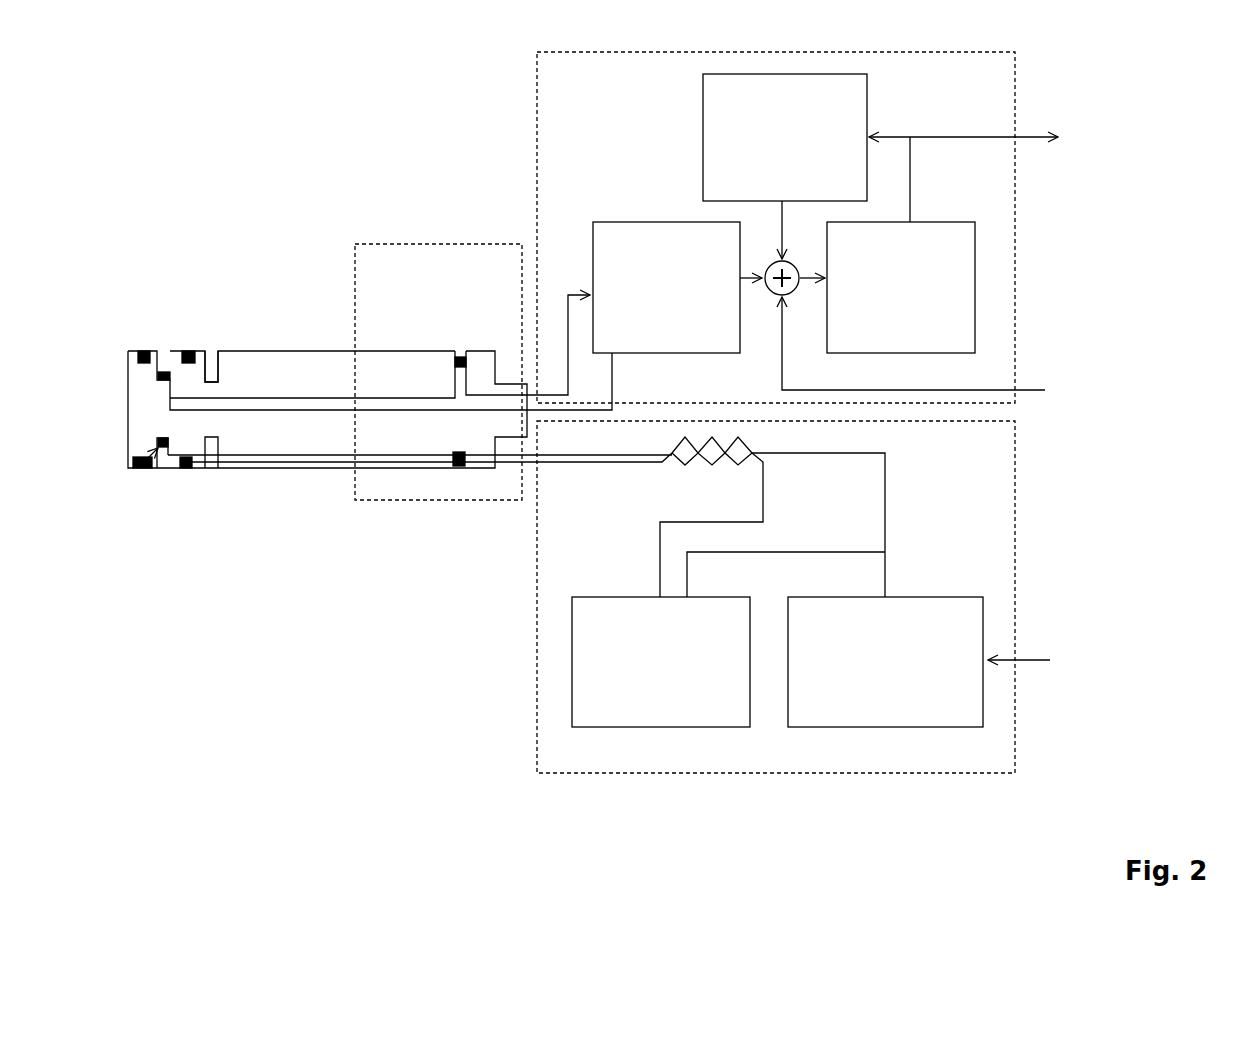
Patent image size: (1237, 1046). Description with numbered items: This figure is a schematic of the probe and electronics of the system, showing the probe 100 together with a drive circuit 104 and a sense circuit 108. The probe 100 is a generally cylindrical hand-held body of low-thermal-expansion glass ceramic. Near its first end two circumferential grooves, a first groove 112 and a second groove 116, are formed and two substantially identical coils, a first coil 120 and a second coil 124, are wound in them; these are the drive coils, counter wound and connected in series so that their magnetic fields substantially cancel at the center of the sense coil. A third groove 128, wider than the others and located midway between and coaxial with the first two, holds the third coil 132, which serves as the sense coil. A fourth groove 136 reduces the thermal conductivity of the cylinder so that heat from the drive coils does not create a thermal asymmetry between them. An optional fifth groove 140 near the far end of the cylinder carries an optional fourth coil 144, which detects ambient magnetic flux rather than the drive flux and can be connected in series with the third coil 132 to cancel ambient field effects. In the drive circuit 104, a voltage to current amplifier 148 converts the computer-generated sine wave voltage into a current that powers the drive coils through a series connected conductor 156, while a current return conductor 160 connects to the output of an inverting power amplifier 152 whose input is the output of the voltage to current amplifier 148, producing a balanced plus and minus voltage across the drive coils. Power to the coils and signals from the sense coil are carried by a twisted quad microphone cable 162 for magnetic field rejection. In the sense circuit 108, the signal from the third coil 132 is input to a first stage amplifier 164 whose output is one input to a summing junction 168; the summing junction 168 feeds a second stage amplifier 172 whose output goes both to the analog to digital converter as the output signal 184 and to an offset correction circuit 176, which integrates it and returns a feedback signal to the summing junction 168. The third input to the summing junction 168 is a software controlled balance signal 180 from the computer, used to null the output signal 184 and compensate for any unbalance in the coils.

The probe 100 is at (268, 252).
The drive circuit 104 is at (776, 597).
The sense circuit 108 is at (776, 227).
The first groove 112 is at (162, 472).
The second groove 116 is at (193, 475).
The first coil 120 is at (132, 453).
The second coil 124 is at (185, 473).
The third groove 128 is at (168, 472).
The third coil 132 is at (145, 468).
The fourth groove 136 is at (211, 350).
The fifth groove 140 is at (463, 350).
The fourth coil 144 is at (455, 357).
The voltage to current amplifier 148 is at (982, 662).
The inverting power amplifier 152 is at (661, 662).
The series connected conductor 156 is at (633, 453).
The current return conductor 160 is at (610, 470).
The twisted quad microphone cable 162 is at (712, 464).
The first stage amplifier 164 is at (666, 287).
The summing junction 168 is at (769, 264).
The second stage amplifier 172 is at (901, 287).
The offset correction circuit 176 is at (785, 137).
The balance signal 180 is at (980, 350).
The output signal 184 is at (1010, 174).